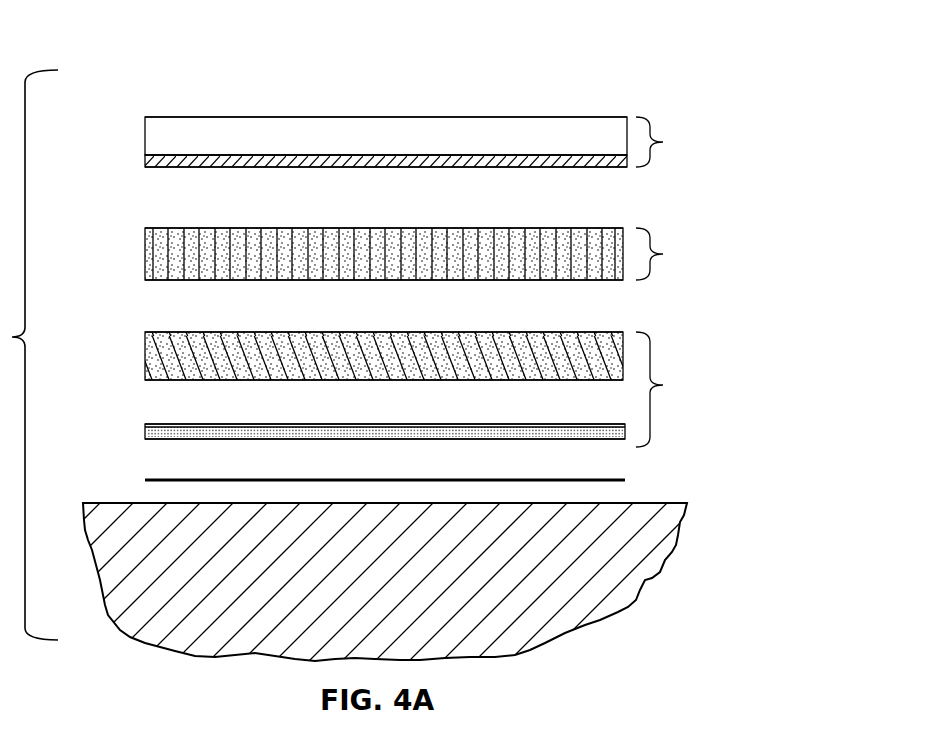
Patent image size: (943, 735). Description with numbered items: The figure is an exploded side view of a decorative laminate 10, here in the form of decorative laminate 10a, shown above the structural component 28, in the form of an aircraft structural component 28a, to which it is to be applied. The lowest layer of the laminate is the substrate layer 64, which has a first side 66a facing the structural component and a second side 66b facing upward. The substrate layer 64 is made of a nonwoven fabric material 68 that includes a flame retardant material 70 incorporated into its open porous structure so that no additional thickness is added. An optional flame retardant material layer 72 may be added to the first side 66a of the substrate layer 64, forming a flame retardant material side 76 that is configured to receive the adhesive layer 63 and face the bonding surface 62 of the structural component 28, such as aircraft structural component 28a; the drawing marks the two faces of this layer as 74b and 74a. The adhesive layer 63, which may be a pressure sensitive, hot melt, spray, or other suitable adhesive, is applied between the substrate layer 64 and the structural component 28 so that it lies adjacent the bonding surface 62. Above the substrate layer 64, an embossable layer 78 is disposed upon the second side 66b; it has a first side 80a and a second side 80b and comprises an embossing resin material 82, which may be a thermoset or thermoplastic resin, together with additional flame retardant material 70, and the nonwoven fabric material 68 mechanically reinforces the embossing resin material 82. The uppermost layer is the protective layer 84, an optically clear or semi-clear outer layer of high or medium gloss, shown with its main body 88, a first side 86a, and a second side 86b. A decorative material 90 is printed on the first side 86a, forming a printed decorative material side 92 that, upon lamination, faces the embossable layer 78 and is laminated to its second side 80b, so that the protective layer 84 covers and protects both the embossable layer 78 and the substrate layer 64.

The decorative laminate 10 is at (697, 62).
The decorative laminate 10a is at (701, 95).
The structural component 28 is at (416, 571).
The aircraft structural component 28a is at (640, 572).
The bonding surface 62 is at (648, 503).
The adhesive layer 63 is at (145, 480).
The substrate layer 64 is at (434, 390).
The first side 66a is at (490, 380).
The second side 66b is at (495, 332).
The nonwoven fabric material 68 is at (145, 336).
The flame retardant material 70 is at (165, 252).
The flame retardant material layer 72 is at (145, 438).
The lower surface of film sublayer 74a is at (408, 440).
The upper surface of film sublayer 74b is at (405, 424).
The flame retardant material side 76 is at (523, 440).
The embossable layer 78 is at (446, 253).
The first side 80a is at (548, 280).
The second side 80b is at (548, 228).
The embossing resin material 82 is at (145, 233).
The protective layer 84 is at (428, 143).
The first side 86a is at (178, 157).
The second side 86b is at (535, 117).
The protective film 88 is at (145, 128).
The decorative material 90 is at (145, 163).
The printed decorative material side 92 is at (212, 165).